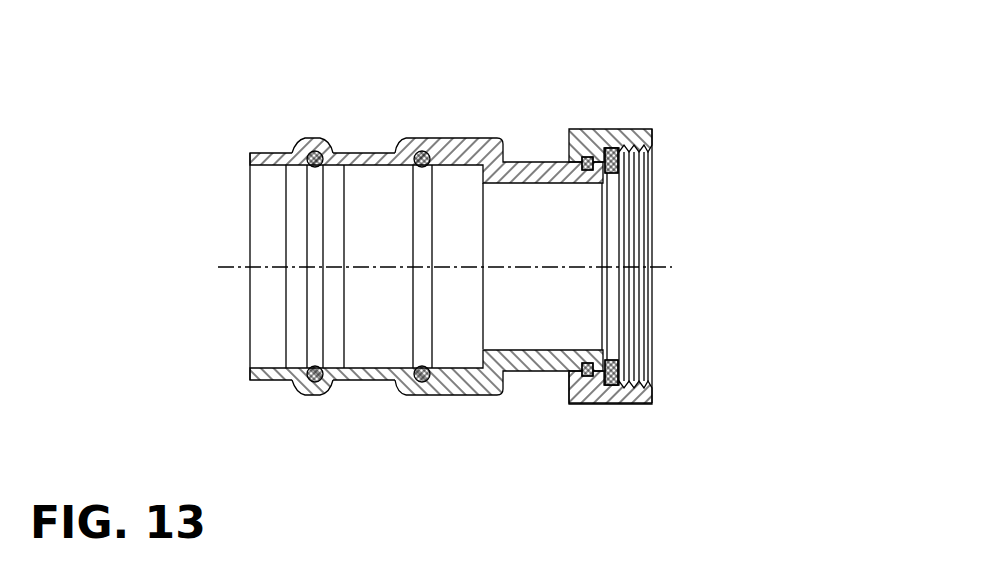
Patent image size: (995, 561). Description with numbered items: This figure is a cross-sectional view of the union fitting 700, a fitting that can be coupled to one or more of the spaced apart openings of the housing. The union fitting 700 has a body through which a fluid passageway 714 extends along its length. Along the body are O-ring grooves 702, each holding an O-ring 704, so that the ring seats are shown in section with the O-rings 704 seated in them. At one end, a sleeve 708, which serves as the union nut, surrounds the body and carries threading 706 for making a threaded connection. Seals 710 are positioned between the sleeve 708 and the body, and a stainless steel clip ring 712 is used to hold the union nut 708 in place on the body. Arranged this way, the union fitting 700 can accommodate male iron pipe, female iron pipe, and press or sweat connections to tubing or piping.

The union fitting 700 is at (478, 397).
The O-ring grooves 702 is at (316, 384).
The O-rings 704 is at (413, 157).
The threading 706 is at (637, 167).
The sleeve 708 is at (603, 402).
The seals 710 is at (610, 147).
The stainless steel clip ring 712 is at (587, 160).
The fluid passageway 714 is at (568, 268).